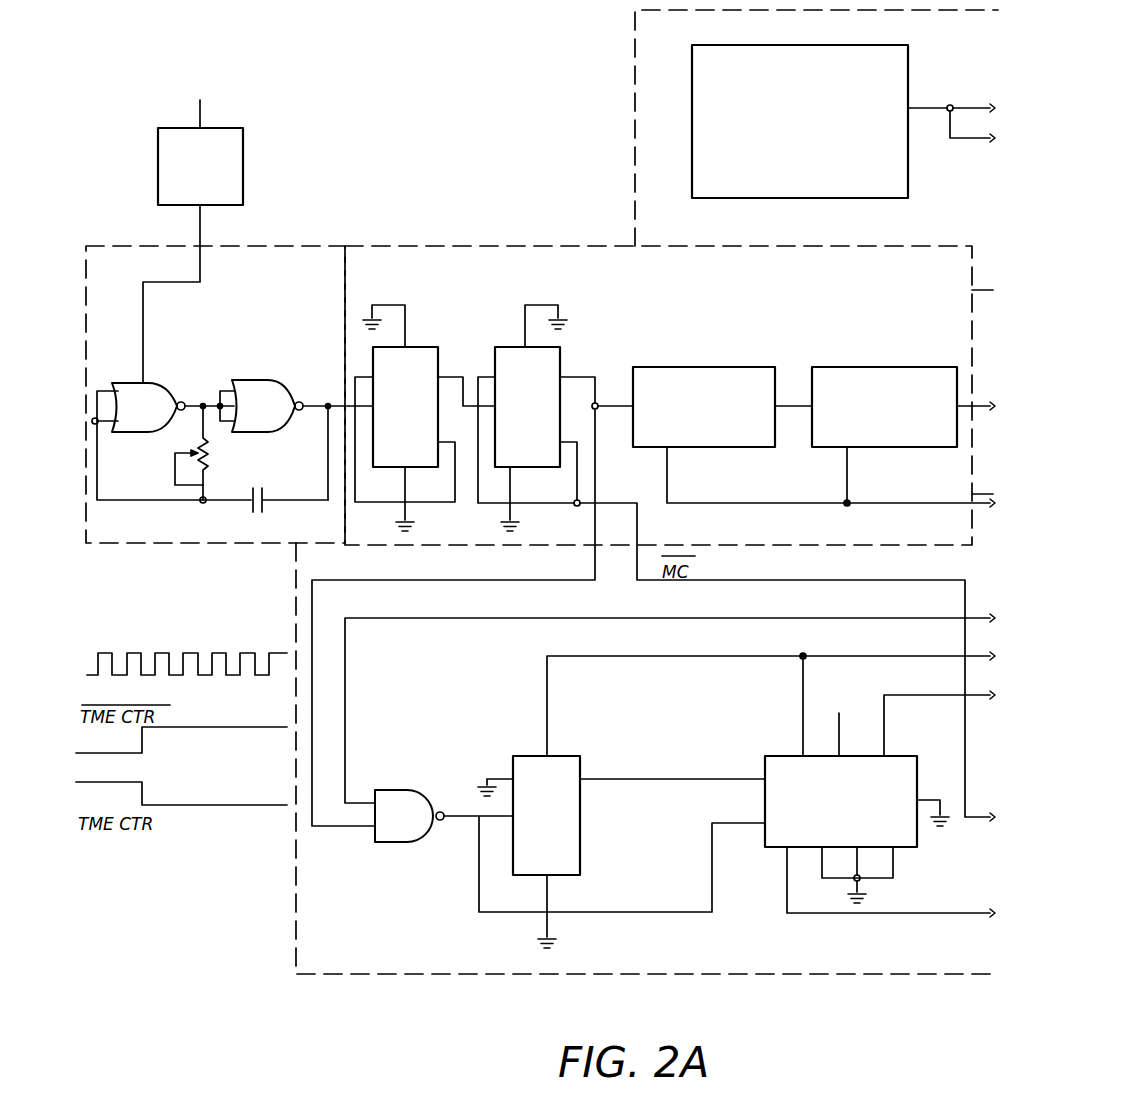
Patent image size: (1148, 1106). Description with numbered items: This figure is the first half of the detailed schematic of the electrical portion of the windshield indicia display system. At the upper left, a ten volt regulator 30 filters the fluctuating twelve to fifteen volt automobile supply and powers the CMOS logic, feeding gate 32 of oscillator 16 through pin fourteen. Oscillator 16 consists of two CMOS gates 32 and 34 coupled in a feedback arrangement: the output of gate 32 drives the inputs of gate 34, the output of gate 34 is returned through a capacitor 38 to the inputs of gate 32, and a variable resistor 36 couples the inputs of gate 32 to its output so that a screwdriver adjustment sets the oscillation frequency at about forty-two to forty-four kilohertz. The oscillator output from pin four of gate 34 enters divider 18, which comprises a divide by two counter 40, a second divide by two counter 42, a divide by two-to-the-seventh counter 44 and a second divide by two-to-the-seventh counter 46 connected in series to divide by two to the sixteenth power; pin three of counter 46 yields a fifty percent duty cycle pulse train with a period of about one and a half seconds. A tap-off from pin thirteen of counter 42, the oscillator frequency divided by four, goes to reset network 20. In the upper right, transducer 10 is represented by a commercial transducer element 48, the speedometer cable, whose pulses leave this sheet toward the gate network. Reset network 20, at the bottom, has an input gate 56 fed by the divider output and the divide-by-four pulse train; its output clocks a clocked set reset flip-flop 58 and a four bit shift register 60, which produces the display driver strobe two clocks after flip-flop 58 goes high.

The transducer 10 is at (982, 48).
The oscillator 16 is at (291, 288).
The divider 18 is at (746, 292).
The reset network 20 is at (736, 967).
The ten volt regulator 30 is at (243, 140).
The CMOS gate 32 is at (125, 383).
The CMOS gate 34 is at (266, 380).
The variable resistor 36 is at (210, 456).
The capacitor 38 is at (280, 473).
The divide by two counter 40 is at (446, 323).
The second divide by two counter 42 is at (513, 347).
The divide by 2^7 counter 44 is at (715, 367).
The second divide by 2^7 counter 46 is at (860, 367).
The commercial transducer element 48 is at (845, 198).
The input gate 56 is at (395, 790).
The clocked set reset flip-flop 58 is at (560, 756).
The four bit shift register 60 is at (778, 756).